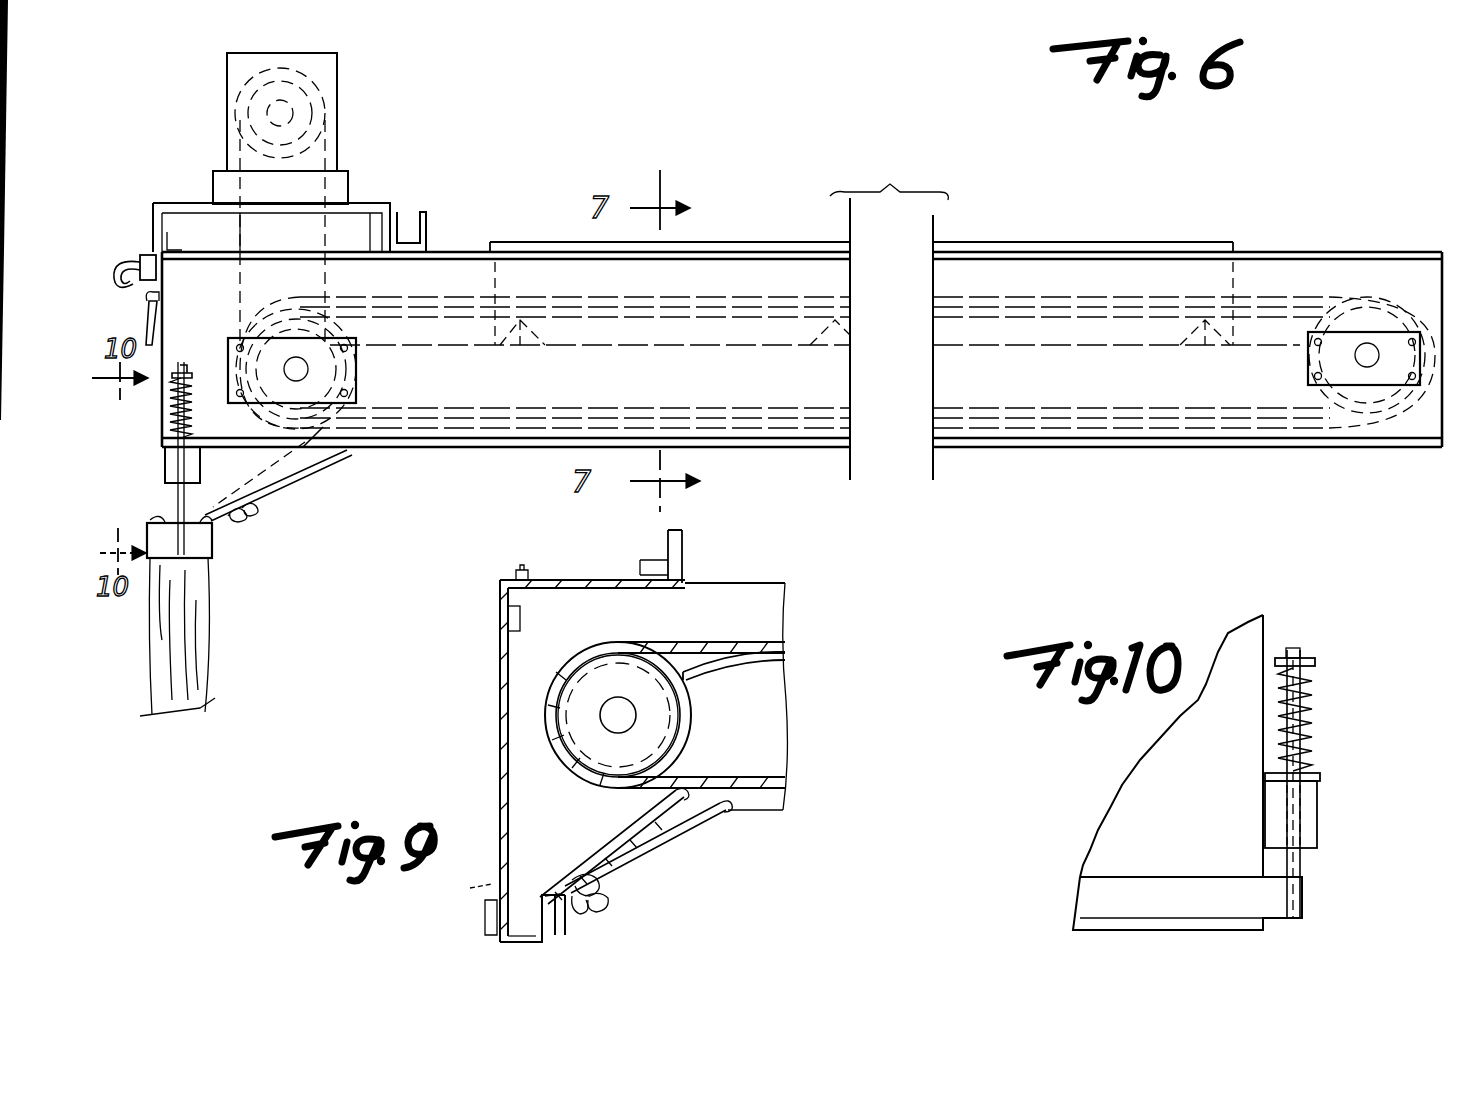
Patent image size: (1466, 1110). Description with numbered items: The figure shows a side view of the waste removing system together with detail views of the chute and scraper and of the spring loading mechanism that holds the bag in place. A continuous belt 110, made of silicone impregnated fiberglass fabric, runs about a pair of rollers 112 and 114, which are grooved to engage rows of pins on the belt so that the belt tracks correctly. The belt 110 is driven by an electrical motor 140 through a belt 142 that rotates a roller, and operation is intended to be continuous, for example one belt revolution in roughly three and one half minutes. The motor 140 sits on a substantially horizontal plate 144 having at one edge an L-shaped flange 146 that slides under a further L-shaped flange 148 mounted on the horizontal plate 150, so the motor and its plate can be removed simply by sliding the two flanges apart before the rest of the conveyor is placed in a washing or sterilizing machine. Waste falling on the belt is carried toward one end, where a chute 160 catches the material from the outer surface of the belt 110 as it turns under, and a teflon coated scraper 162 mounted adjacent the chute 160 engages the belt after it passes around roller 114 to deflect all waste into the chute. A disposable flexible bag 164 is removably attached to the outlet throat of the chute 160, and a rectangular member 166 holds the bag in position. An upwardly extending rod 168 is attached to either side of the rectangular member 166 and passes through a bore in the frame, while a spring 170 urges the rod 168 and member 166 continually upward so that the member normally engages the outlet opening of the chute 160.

In FIG. 6, the continuous belt 110 is at (810, 318).
In FIG. 6, the roller 112 is at (1370, 300).
In FIG. 6, the roller 114 is at (357, 370).
In FIG. 6, the electrical motor 140 is at (337, 113).
In FIG. 6, the belt 142 is at (325, 190).
In FIG. 6, the horizontal plate 144 is at (185, 205).
In FIG. 6, the L-shaped flange 146 is at (392, 256).
In FIG. 6, the L-shaped flange 148 is at (428, 220).
In FIG. 6, the horizontal plate 150 is at (226, 268).
In FIG. 6, the chute 160 is at (280, 460).
In FIG. 9, the chute 160 is at (570, 860).
In FIG. 6, the teflon coated scraper 162 is at (305, 482).
In FIG. 9, the teflon coated scraper 162 is at (665, 822).
In FIG. 6, the flexible bag 164 is at (200, 655).
In FIG. 6, the rectangular member 166 is at (212, 545).
In FIG. 9, the rectangular member 166 is at (556, 925).
In FIG. 6, the rod 168 is at (180, 494).
In FIG. 10, the rod 168 is at (1320, 765).
In FIG. 10, the spring 170 is at (1314, 694).